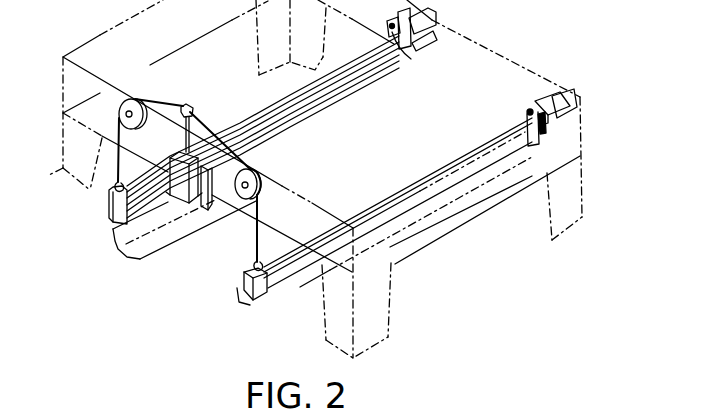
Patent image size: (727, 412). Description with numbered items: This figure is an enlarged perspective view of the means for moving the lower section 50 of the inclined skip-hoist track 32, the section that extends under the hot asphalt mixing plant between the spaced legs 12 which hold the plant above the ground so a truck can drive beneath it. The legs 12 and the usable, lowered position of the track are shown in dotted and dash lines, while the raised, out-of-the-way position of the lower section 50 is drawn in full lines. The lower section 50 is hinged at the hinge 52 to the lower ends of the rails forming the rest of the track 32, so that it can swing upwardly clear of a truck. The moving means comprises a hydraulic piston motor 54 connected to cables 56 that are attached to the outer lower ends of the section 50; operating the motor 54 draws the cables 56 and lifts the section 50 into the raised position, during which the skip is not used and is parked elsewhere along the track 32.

The legs 12 is at (303, 182).
The track 32 is at (436, 28).
The lower section of the track 50 is at (422, 182).
The hinge 52 is at (527, 110).
The hydraulic piston motor 54 is at (198, 178).
The cables 56 is at (221, 128).